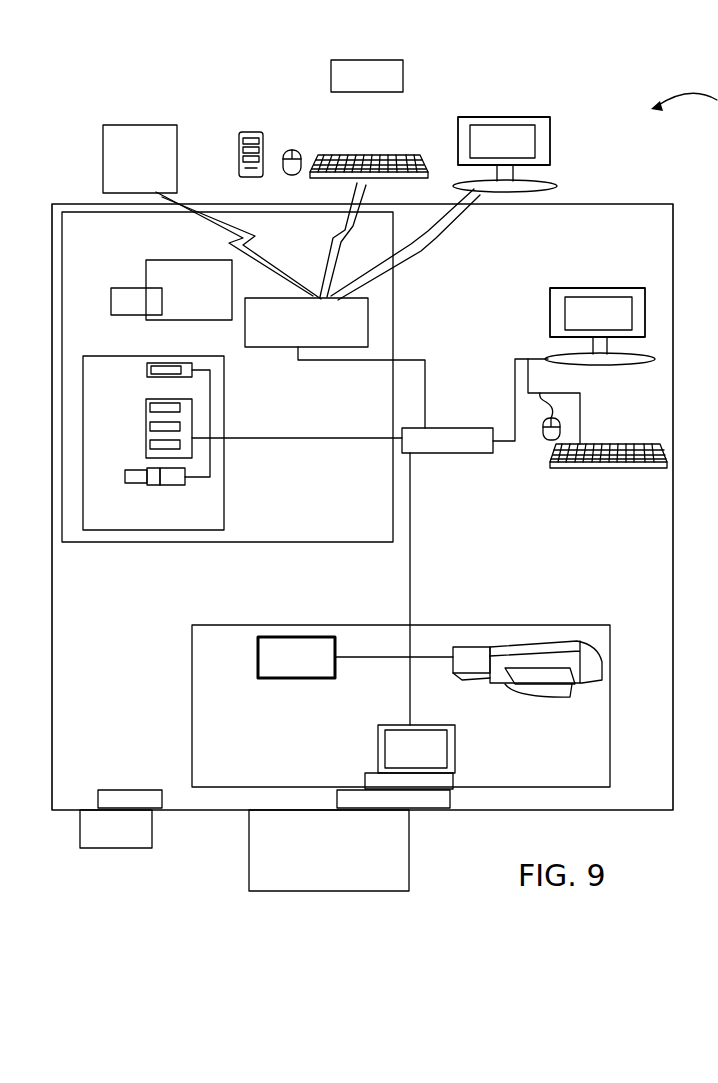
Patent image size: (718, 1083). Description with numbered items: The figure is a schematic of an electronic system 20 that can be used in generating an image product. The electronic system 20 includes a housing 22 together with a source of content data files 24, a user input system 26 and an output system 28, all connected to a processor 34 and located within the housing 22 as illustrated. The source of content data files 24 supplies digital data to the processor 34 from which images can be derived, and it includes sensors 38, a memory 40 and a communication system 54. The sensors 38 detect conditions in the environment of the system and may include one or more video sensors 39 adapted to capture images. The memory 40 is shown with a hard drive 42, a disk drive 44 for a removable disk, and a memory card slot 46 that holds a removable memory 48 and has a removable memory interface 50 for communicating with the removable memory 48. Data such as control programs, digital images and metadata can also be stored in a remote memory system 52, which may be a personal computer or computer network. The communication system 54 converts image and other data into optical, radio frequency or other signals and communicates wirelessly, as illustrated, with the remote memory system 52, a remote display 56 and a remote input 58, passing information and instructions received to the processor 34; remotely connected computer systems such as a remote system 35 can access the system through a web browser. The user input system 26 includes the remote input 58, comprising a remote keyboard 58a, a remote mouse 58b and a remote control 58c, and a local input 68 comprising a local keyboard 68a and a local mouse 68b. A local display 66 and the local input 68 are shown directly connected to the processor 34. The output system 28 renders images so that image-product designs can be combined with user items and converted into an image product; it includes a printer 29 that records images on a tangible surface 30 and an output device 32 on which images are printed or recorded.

The electronic system 20 is at (177, 824).
The housing 22 is at (347, 808).
The source of content data files 24 is at (103, 543).
The user input system 26 is at (621, 178).
The output system 28 is at (192, 708).
The printer 29 is at (470, 685).
The tangible surface 30 is at (258, 659).
The output device 32 is at (378, 742).
The processor 34 is at (467, 428).
The remote system 35 is at (560, 104).
The sensors 38 is at (152, 260).
The video sensors 39 is at (125, 288).
The memory 40 is at (98, 356).
The hard drive 42 is at (146, 431).
The disk drive 44 is at (147, 370).
The memory card slot 46 is at (172, 485).
The removable memory 48 is at (134, 483).
The removable memory interface 50 is at (153, 485).
The remote memory system 52 is at (140, 125).
The communication system 54 is at (254, 348).
The remote display 56 is at (510, 117).
The remote input 58 is at (404, 146).
The remote keyboard 58a is at (368, 155).
The remote mouse 58b is at (291, 150).
The remote control 58c is at (250, 132).
The local display 66 is at (625, 288).
The local input 68 is at (638, 444).
The local keyboard 68a is at (606, 445).
The local mouse 68b is at (545, 440).